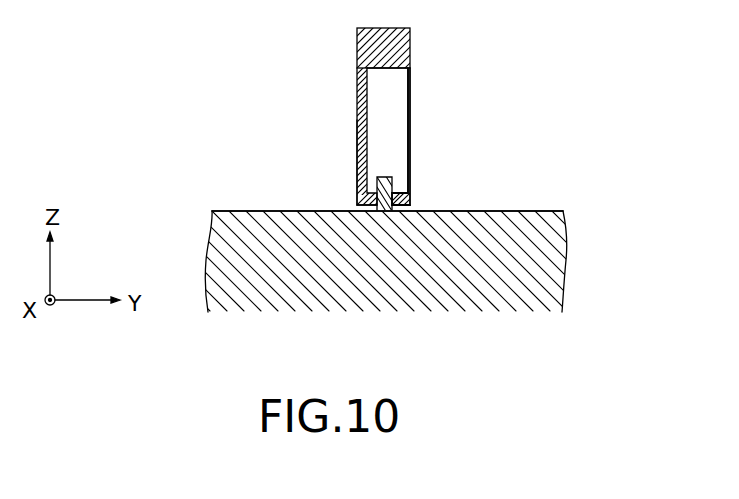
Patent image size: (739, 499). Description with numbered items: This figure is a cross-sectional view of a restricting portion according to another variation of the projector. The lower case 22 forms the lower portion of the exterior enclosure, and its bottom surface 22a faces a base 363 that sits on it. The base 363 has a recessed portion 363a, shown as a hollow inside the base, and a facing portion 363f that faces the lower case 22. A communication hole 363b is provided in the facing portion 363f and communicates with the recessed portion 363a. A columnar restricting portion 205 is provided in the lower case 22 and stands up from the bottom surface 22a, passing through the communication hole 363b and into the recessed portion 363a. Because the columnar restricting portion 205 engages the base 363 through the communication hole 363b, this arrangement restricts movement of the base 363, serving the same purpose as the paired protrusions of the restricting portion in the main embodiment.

The lower case 22 is at (553, 262).
The bottom surface 22a is at (540, 210).
The base 363 is at (411, 46).
The recessed portion 363a is at (368, 99).
The communication hole 363b is at (385, 212).
The facing portion 363f is at (346, 179).
The columnar restricting portion 205 is at (386, 180).